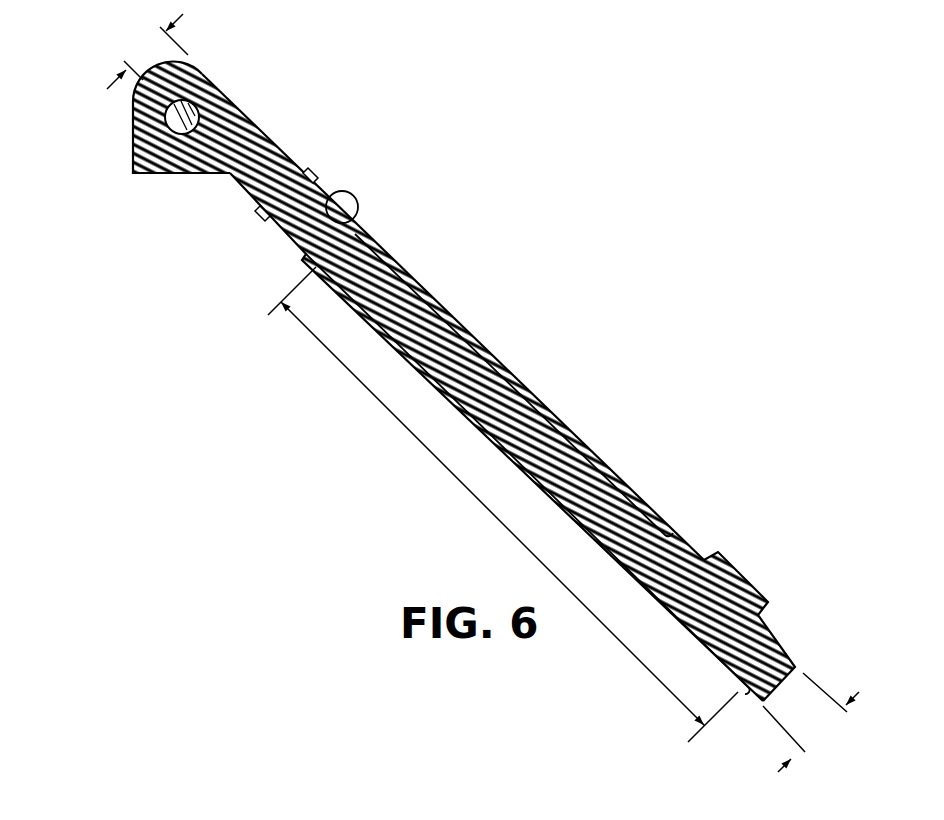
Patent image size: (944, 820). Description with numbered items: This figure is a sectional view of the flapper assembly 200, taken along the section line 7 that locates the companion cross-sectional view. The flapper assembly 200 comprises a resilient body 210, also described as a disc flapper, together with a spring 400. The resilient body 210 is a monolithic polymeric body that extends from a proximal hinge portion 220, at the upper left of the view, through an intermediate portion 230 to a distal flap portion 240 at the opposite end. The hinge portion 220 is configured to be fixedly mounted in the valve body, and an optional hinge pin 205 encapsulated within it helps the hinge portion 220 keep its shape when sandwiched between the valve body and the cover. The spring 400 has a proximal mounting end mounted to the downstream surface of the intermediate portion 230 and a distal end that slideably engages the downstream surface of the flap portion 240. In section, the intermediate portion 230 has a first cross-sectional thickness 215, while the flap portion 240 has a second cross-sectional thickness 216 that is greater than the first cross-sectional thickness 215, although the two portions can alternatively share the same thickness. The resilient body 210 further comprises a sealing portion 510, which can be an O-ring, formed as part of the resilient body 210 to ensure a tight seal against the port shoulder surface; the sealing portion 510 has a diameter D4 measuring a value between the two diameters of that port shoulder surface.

The section line 7- 7 is at (356, 203).
The flapper assembly 200 is at (584, 274).
The hinge pin 205 is at (131, 128).
The resilient body 210 is at (778, 643).
The first cross-sectional thickness 215 is at (144, 47).
The second cross-sectional thickness 216 is at (823, 730).
The proximal hinge portion 220 is at (192, 173).
The intermediate portion 230 is at (292, 222).
The distal flap portion 240 is at (457, 357).
The spring 400 is at (627, 480).
The sealing portion 510 is at (316, 264).
The diameter D4 is at (476, 511).